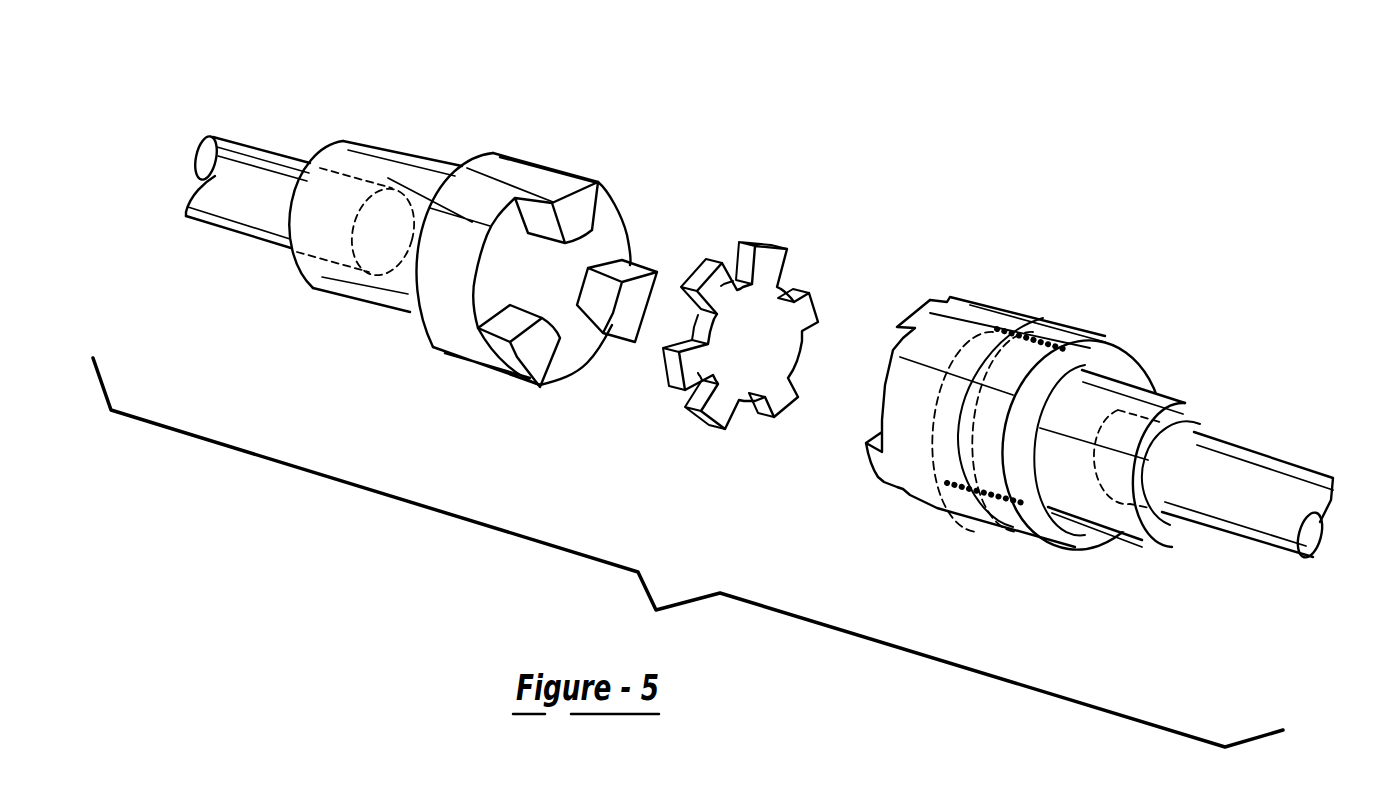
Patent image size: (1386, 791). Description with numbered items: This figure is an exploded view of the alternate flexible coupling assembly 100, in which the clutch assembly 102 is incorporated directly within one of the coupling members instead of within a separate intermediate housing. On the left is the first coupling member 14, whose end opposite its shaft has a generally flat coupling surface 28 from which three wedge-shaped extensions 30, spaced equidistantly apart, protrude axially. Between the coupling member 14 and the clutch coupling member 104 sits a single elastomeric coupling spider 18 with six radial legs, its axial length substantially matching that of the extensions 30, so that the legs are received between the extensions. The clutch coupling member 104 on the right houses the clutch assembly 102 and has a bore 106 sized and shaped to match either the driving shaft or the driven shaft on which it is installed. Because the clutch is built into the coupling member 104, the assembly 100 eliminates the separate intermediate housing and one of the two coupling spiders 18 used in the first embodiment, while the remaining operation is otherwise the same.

The first coupling member 14 is at (410, 177).
The coupling surface 28 is at (568, 265).
The extensions 30 is at (497, 353).
The coupling spider 18 is at (776, 262).
The flexible coupling assembly 100 is at (1101, 344).
The clutch assembly 102 is at (1008, 388).
The clutch coupling member 104 is at (1012, 309).
The bore 106 is at (1190, 430).